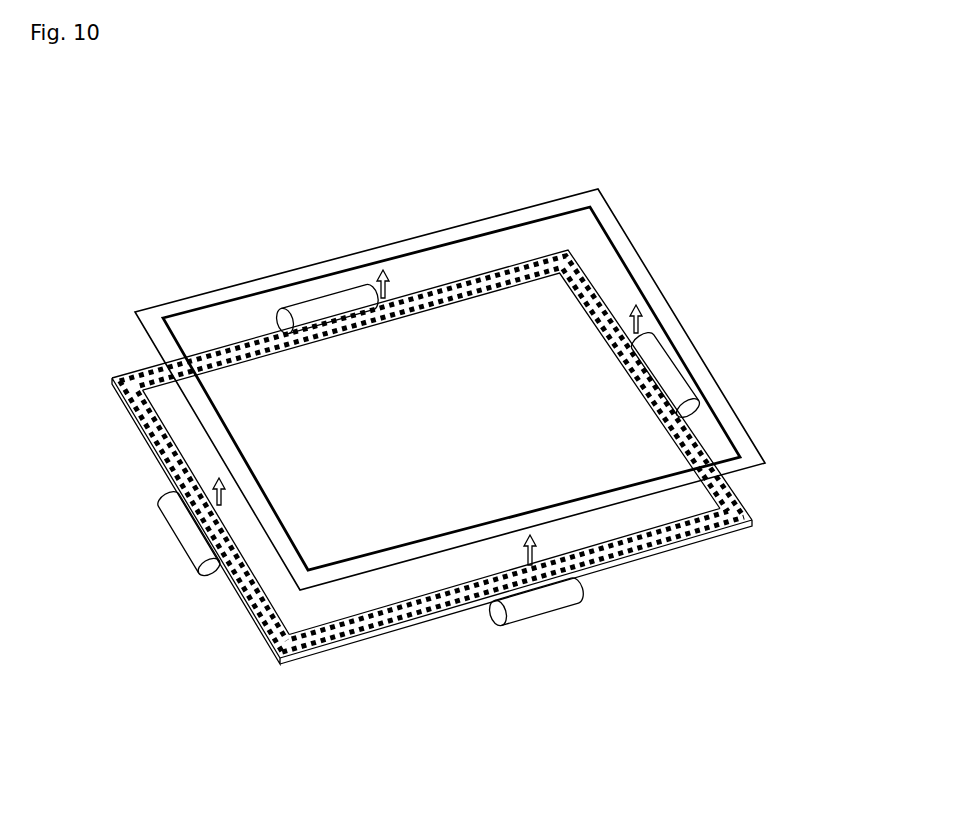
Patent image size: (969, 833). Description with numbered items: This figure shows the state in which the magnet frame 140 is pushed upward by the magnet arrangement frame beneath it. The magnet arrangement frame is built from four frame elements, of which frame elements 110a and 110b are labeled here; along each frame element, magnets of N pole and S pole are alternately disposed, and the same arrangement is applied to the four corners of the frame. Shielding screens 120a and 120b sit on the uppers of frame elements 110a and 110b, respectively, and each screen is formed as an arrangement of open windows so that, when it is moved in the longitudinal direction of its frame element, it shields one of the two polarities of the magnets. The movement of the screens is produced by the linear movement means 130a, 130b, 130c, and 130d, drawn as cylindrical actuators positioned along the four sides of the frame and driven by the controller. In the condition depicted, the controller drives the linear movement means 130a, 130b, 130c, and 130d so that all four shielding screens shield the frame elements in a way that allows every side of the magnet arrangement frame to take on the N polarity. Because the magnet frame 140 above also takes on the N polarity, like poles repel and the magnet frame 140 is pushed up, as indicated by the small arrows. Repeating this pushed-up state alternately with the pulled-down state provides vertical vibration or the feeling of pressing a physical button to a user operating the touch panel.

The frame element 110a is at (268, 636).
The frame element 110b is at (373, 636).
The shielding screen 120a is at (255, 615).
The shielding screen 120b is at (430, 620).
The linear movement means 130a is at (185, 537).
The linear movement means 130b is at (530, 605).
The linear movement means 130c is at (665, 372).
The linear movement means 130d is at (312, 308).
The magnet frame 140 is at (508, 222).